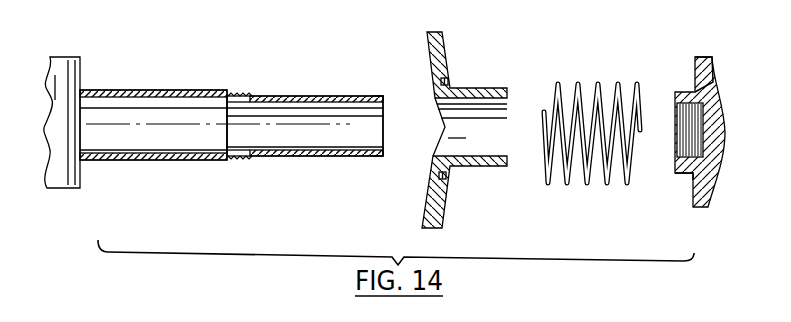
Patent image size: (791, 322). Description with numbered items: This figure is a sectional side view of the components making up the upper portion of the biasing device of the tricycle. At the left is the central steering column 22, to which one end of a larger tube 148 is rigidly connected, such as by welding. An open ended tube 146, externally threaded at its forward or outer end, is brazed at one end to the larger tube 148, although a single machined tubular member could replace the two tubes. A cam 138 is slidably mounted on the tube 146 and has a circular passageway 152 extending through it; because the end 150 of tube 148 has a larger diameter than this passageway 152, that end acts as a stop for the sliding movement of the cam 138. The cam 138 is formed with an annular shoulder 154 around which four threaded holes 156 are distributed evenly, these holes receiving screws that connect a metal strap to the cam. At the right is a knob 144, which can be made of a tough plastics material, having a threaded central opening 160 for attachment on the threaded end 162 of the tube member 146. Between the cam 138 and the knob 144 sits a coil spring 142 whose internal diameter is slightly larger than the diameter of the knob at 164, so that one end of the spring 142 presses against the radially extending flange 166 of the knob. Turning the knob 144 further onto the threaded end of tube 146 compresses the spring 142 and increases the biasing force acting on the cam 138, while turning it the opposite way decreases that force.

The central steering column 22 is at (60, 157).
The larger tube 148 is at (170, 155).
The open ended tube 146 is at (315, 97).
The end of tube 150 is at (257, 156).
The threaded end of tube member 162 is at (370, 157).
The cam 138 is at (438, 220).
The circular passageway 152 is at (500, 108).
The threaded holes 156 is at (450, 78).
The shoulder 154 is at (448, 178).
The coil spring 142 is at (587, 170).
The knob 144 is at (685, 134).
The central opening 160 is at (680, 112).
The radially extending flange 166 is at (700, 58).
The knob portion 164 is at (684, 177).